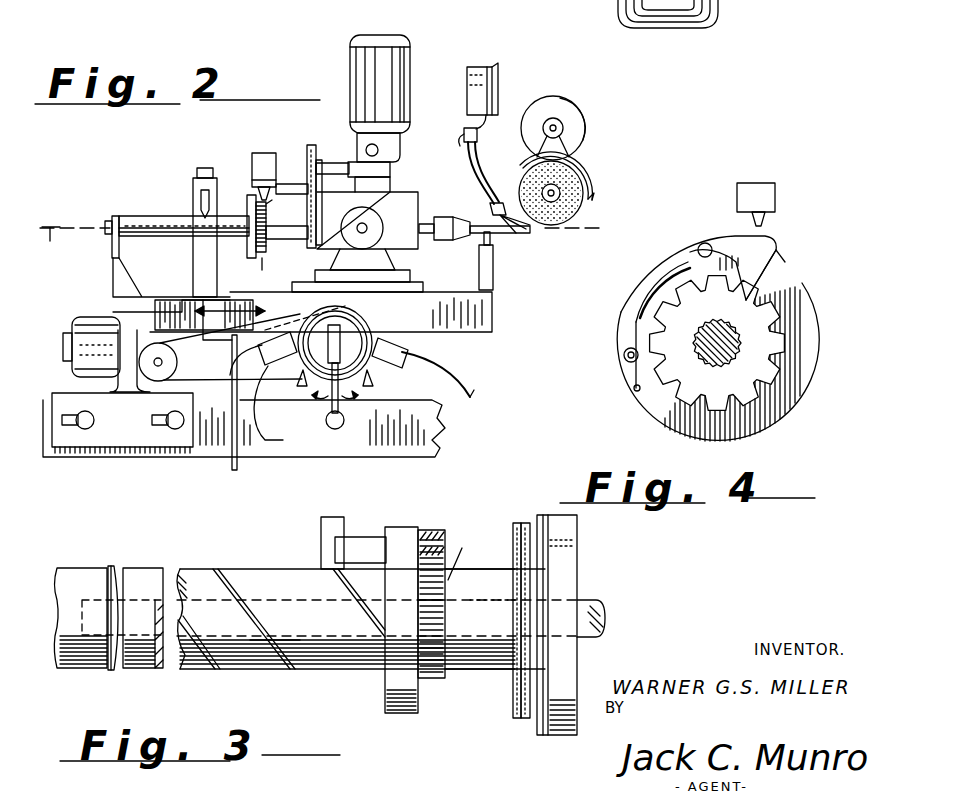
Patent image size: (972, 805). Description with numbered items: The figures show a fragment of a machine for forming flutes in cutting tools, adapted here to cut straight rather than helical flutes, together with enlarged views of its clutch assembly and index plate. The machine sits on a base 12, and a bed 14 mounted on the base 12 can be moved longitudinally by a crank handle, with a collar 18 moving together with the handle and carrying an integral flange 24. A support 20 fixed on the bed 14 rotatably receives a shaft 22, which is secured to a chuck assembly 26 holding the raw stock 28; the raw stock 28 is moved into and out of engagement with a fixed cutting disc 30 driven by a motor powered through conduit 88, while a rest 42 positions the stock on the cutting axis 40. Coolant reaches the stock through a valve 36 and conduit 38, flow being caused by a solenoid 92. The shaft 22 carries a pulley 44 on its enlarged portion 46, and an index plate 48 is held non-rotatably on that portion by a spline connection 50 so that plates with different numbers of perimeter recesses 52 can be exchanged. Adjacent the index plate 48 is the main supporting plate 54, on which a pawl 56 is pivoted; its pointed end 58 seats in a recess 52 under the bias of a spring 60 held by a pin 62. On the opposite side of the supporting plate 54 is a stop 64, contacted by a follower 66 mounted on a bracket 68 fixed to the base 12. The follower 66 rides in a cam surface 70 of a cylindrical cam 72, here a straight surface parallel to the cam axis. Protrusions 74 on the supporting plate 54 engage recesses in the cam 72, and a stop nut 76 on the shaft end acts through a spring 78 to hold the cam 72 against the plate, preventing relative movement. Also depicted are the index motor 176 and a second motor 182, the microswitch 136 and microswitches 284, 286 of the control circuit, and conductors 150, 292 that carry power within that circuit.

In FIG. 2, the base 12 is at (427, 427).
In FIG. 2, the bed 14 is at (455, 322).
In FIG. 2, the collar 18 is at (373, 376).
In FIG. 2, the support 20 is at (413, 207).
In FIG. 3, the support 20 is at (554, 738).
In FIG. 2, the shaft 22 is at (427, 240).
In FIG. 3, the shaft 22 is at (592, 606).
In FIG. 2, the flange 24 is at (307, 387).
In FIG. 2, the chuck assembly 26 is at (457, 242).
In FIG. 2, the raw stock 28 is at (496, 240).
In FIG. 2, the cutting disc 30 is at (575, 182).
In FIG. 2, the valve 36 is at (462, 135).
In FIG. 2, the conduit 38 is at (471, 158).
In FIG. 2, the cutting axis 40 is at (577, 230).
In FIG. 2, the rest 42 is at (488, 280).
In FIG. 2, the pulley 44 is at (308, 247).
In FIG. 3, the pulley 44 is at (521, 712).
In FIG. 2, the enlarged portion 46 is at (287, 215).
In FIG. 3, the enlarged portion 46 is at (498, 672).
In FIG. 2, the index plate 48 is at (262, 258).
In FIG. 4, the index plate 48 is at (758, 370).
In FIG. 3, the index plate 48 is at (448, 580).
In FIG. 4, the spline connection 50 is at (708, 365).
In FIG. 2, the recesses 52 is at (268, 206).
In FIG. 4, the recesses 52 is at (782, 300).
In FIG. 3, the recesses 52 is at (432, 678).
In FIG. 2, the main supporting plate 54 is at (249, 259).
In FIG. 3, the main supporting plate 54 is at (405, 527).
In FIG. 4, the pawl 56 is at (665, 258).
In FIG. 3, the pawl 56 is at (440, 530).
In FIG. 4, the pointed end 58 is at (767, 265).
In FIG. 4, the spring 60 is at (633, 318).
In FIG. 4, the pin 62 is at (624, 360).
In FIG. 3, the stop 64 is at (365, 537).
In FIG. 3, the follower 66 is at (320, 532).
In FIG. 2, the bracket 68 is at (192, 263).
In FIG. 2, the cam surface 70 is at (143, 222).
In FIG. 3, the cam surface 70 is at (330, 672).
In FIG. 2, the cam 72 is at (144, 234).
In FIG. 3, the cam 72 is at (148, 672).
In FIG. 3, the protrusions 74 is at (376, 656).
In FIG. 2, the stop nut 76 is at (112, 218).
In FIG. 3, the stop nut 76 is at (57, 673).
In FIG. 3, the spring 78 is at (115, 672).
In FIG. 2, the conduit 88 is at (677, 30).
In FIG. 2, the solenoid 92 is at (492, 67).
In FIG. 2, the microswitch 136 is at (258, 152).
In FIG. 4, the microswitch 136 is at (772, 188).
In FIG. 2, the conductor 150 is at (467, 388).
In FIG. 2, the index motor 176 is at (400, 37).
In FIG. 2, the motor 182 is at (80, 317).
In FIG. 2, the microswitch 284 is at (390, 348).
In FIG. 2, the microswitch 286 is at (282, 403).
In FIG. 2, the conductor 292 is at (229, 438).